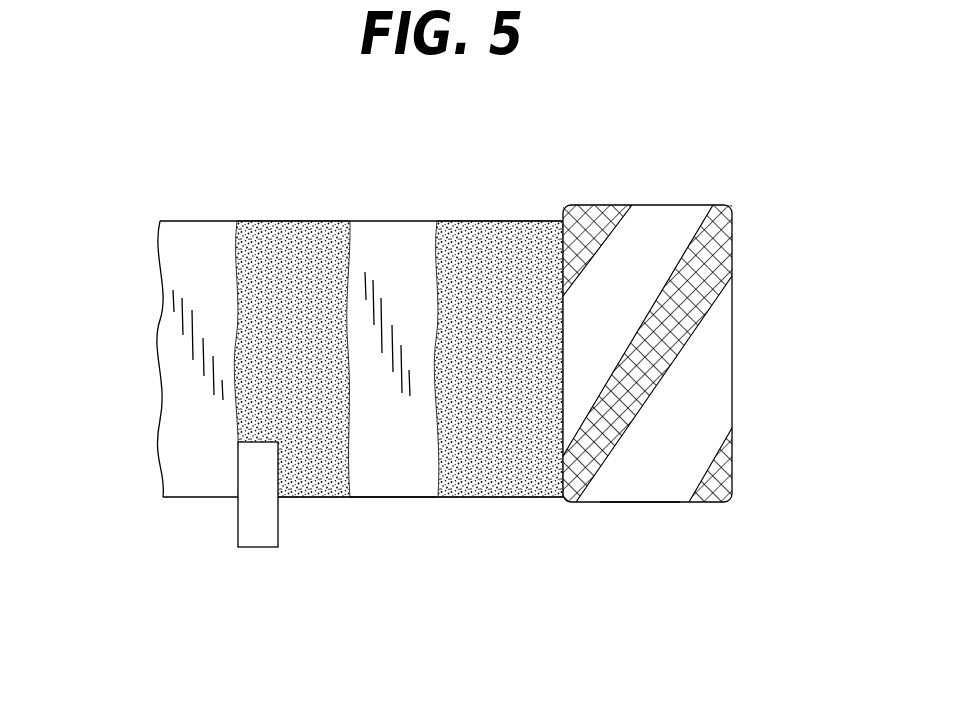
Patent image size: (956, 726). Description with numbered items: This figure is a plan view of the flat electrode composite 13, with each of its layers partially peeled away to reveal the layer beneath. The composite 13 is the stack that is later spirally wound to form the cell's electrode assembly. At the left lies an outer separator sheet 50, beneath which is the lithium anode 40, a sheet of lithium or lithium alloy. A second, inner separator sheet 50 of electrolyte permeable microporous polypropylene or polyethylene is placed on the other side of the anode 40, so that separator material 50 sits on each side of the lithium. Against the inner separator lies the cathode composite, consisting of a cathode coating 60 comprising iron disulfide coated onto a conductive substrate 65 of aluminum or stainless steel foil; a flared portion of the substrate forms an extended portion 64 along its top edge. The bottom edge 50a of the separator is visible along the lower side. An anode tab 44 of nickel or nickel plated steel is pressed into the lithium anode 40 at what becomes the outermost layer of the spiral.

The flat electrode composite 13 is at (236, 118).
The lithium anode 40 is at (290, 253).
The anode tab 44 is at (265, 548).
The separator sheet 50 is at (178, 235).
The bottom edge of separator 50a is at (392, 492).
The cathode coating 60 is at (492, 243).
The extended portion of cathode substrate 64 is at (700, 207).
The substrate 65 is at (667, 483).